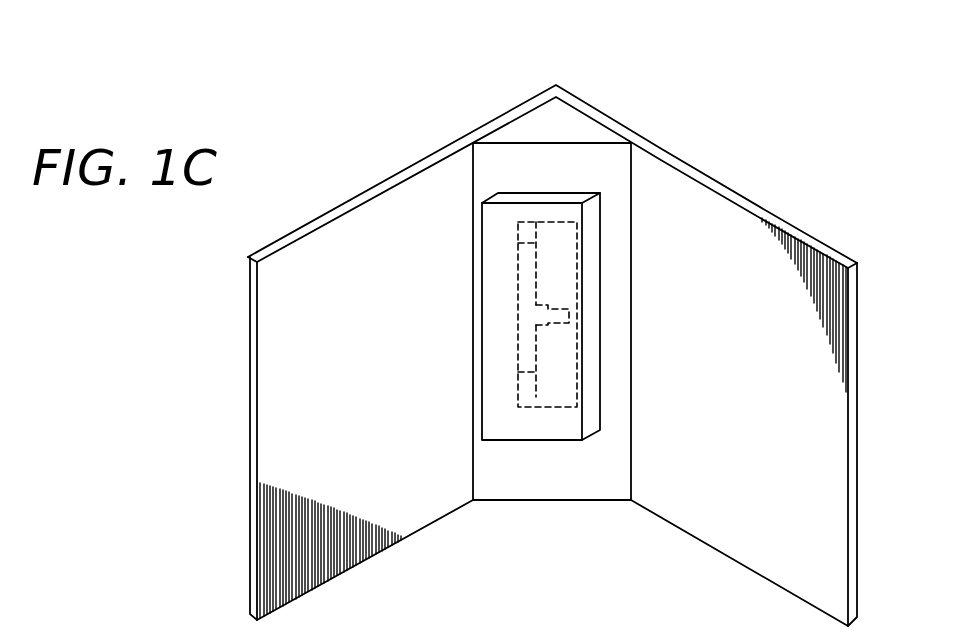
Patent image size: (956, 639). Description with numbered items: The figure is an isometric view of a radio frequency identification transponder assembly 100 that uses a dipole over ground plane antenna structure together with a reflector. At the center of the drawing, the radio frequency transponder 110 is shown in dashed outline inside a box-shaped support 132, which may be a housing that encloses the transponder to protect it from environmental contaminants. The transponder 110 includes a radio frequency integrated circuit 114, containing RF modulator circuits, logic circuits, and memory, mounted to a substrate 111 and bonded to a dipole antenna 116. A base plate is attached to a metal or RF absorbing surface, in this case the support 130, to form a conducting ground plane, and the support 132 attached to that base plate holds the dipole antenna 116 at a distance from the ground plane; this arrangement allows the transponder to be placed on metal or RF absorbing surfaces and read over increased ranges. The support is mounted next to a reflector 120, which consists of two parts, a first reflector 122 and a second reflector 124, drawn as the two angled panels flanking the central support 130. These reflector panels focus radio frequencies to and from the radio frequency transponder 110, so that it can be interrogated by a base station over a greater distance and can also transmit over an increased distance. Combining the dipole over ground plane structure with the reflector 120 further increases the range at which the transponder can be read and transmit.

The radio frequency identification transponder assembly 100 is at (723, 89).
The reflector 120 is at (335, 248).
The first reflector 122 is at (307, 577).
The second reflector 124 is at (737, 533).
The support 130 is at (492, 465).
The support 132 is at (567, 427).
The substrate 111 is at (557, 382).
The radio frequency transponder 110 is at (527, 372).
The radio frequency integrated circuit 114 is at (567, 313).
The dipole antenna 116 is at (527, 243).